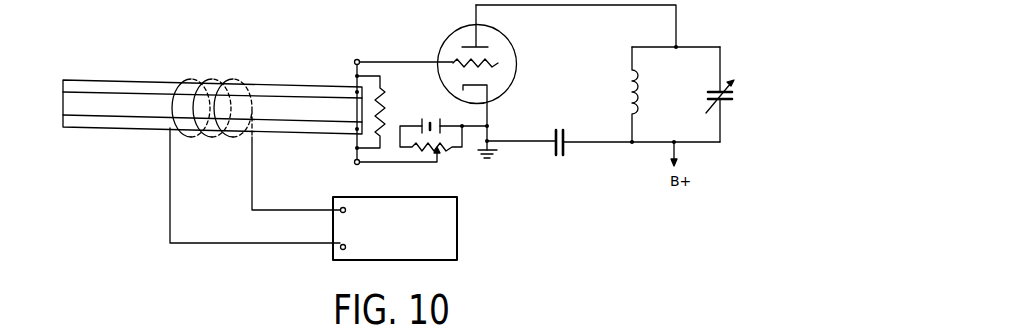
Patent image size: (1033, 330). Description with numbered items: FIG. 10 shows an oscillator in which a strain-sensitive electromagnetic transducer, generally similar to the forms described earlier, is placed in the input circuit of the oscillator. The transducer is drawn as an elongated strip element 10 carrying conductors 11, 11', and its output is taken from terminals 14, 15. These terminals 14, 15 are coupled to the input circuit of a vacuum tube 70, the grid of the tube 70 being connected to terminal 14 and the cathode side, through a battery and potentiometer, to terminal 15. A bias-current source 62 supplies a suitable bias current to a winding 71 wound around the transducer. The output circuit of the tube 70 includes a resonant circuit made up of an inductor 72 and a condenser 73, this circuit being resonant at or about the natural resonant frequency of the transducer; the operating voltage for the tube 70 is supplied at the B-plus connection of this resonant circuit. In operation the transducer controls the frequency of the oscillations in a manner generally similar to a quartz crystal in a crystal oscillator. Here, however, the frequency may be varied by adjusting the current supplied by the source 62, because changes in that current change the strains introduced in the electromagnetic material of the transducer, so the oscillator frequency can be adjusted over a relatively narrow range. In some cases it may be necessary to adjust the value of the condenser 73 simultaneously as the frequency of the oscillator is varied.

The strip line element 10 is at (70, 103).
The conductor 11 is at (196, 84).
The conductor 11' is at (195, 124).
The terminal 14 is at (360, 59).
The terminal 15 is at (355, 164).
The bias-current source 62 is at (458, 228).
The vacuum tube 70 is at (504, 41).
The winding 71 is at (233, 80).
The resonant circuit inductor 72 is at (627, 85).
The condenser 73 is at (735, 99).